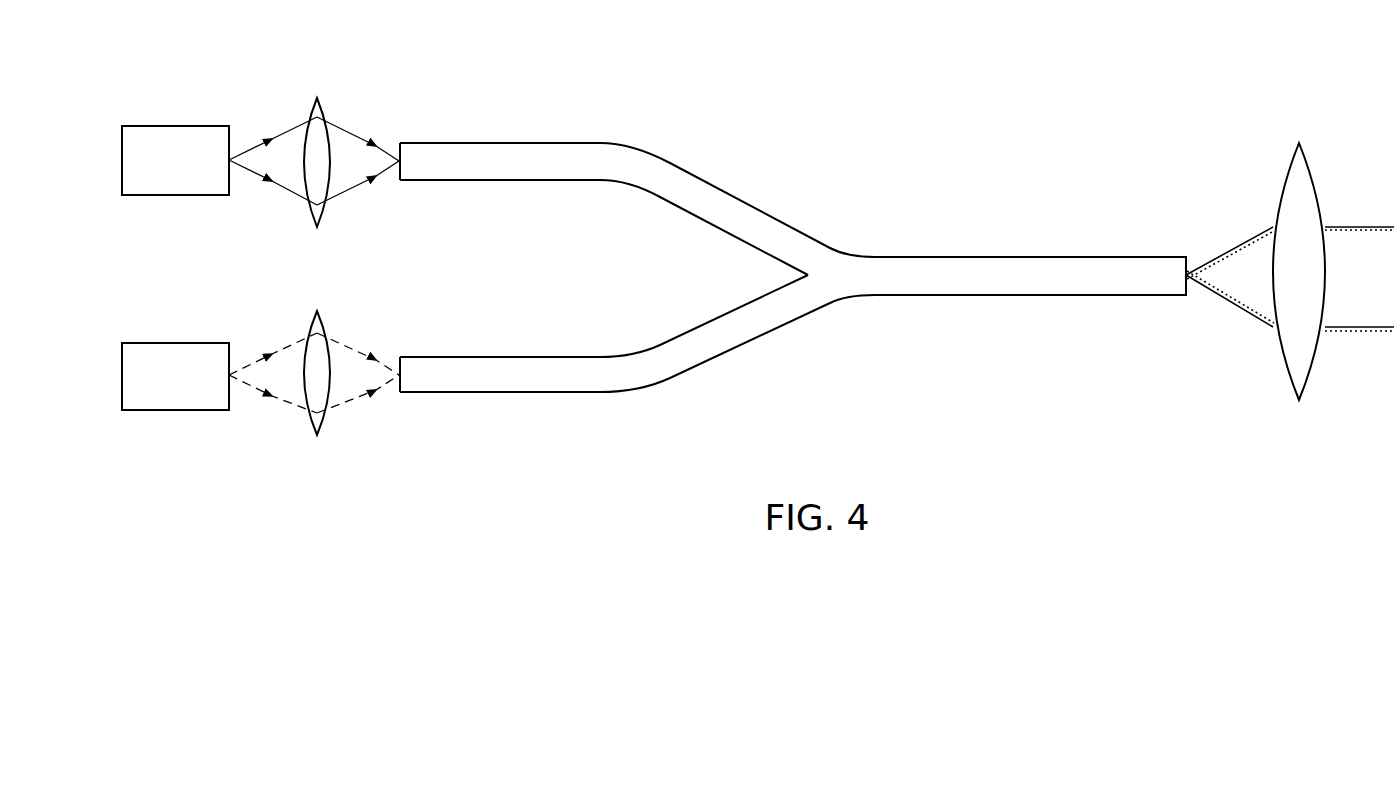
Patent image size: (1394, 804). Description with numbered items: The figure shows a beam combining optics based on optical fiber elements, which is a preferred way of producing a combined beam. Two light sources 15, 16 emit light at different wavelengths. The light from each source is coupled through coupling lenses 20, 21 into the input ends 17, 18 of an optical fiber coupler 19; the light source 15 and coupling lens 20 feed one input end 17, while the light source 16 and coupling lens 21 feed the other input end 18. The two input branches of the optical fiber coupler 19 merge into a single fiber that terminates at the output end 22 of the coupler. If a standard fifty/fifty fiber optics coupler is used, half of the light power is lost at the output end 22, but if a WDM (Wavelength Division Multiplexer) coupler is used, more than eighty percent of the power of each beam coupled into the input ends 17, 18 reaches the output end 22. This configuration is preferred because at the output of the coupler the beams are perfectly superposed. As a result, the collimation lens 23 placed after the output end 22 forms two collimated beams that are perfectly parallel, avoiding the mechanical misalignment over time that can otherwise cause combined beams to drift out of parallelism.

The light source 15 is at (140, 397).
The light source 16 is at (147, 173).
The input end 17 is at (397, 383).
The input end 18 is at (398, 150).
The optical fiber coupler 19 is at (785, 262).
The coupling lens 20 is at (310, 418).
The coupling lens 21 is at (312, 108).
The output end 22 is at (1187, 265).
The collimation lens 23 is at (1291, 359).